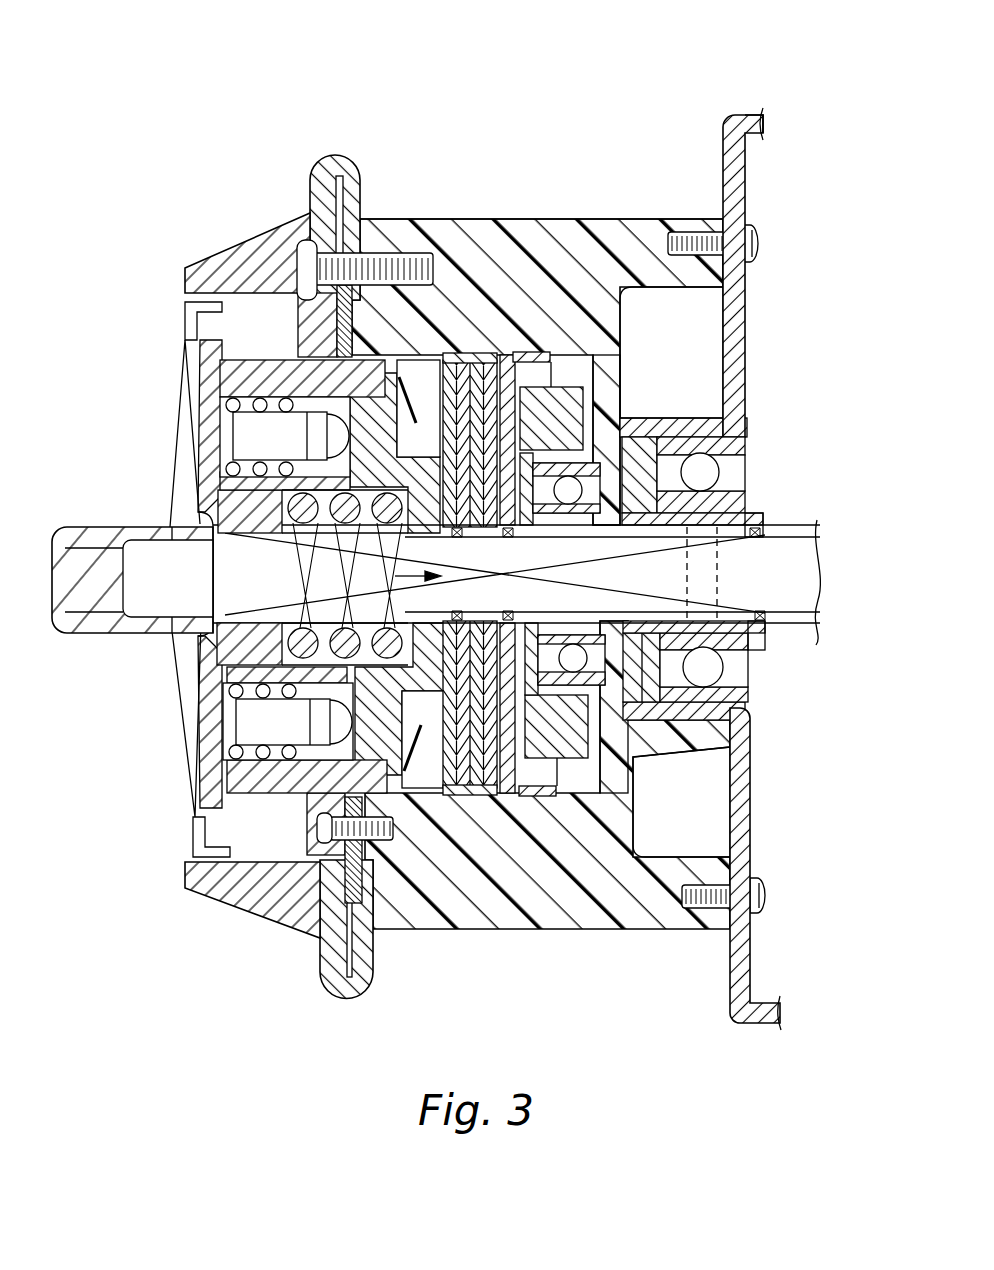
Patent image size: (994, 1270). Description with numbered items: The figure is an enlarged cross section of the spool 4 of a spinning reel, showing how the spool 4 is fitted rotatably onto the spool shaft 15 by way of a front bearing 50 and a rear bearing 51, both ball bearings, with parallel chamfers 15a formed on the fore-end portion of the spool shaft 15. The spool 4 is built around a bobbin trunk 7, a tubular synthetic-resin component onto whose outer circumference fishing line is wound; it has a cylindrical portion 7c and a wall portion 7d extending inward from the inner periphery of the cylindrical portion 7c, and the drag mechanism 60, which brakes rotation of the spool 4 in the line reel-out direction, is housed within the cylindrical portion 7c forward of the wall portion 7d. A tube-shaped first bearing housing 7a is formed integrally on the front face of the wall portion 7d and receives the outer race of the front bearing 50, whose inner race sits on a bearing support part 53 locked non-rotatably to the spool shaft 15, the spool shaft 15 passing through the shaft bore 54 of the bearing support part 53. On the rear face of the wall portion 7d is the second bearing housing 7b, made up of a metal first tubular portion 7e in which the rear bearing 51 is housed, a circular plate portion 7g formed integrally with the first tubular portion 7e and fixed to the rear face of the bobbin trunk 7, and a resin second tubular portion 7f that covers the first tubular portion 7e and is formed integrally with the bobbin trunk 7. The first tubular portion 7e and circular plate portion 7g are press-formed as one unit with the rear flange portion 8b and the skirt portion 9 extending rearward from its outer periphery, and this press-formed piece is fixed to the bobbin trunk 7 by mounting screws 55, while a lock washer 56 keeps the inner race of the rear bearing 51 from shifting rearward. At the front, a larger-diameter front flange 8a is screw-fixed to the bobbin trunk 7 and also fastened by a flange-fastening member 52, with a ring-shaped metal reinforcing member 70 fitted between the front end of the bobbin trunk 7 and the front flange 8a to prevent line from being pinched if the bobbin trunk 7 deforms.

The spool 4 is at (490, 148).
The bobbin trunk 7 is at (520, 205).
The first bearing housing 7a is at (600, 400).
The second bearing housing 7b is at (718, 398).
The cylindrical portion 7c is at (465, 247).
The wall portion 7d is at (650, 392).
The first tubular portion 7e is at (735, 427).
The second tubular portion 7f is at (712, 405).
The circular plate portion 7g is at (742, 290).
The front flange 8a is at (335, 157).
The rear flange portion 8b is at (720, 163).
The skirt portion 9 is at (757, 120).
The spool shaft 15 is at (213, 642).
The chamfers 15a is at (413, 598).
The front bearing 50 is at (557, 517).
The rear bearing 51 is at (742, 447).
The flange-fastening member 52 is at (233, 247).
The bearing support part 53 is at (818, 525).
The shaft bore 54 is at (687, 568).
The mounting screws 55 is at (757, 240).
The lock washer 56 is at (756, 640).
The drag mechanism 60 is at (563, 830).
The reinforcing member 70 is at (343, 327).